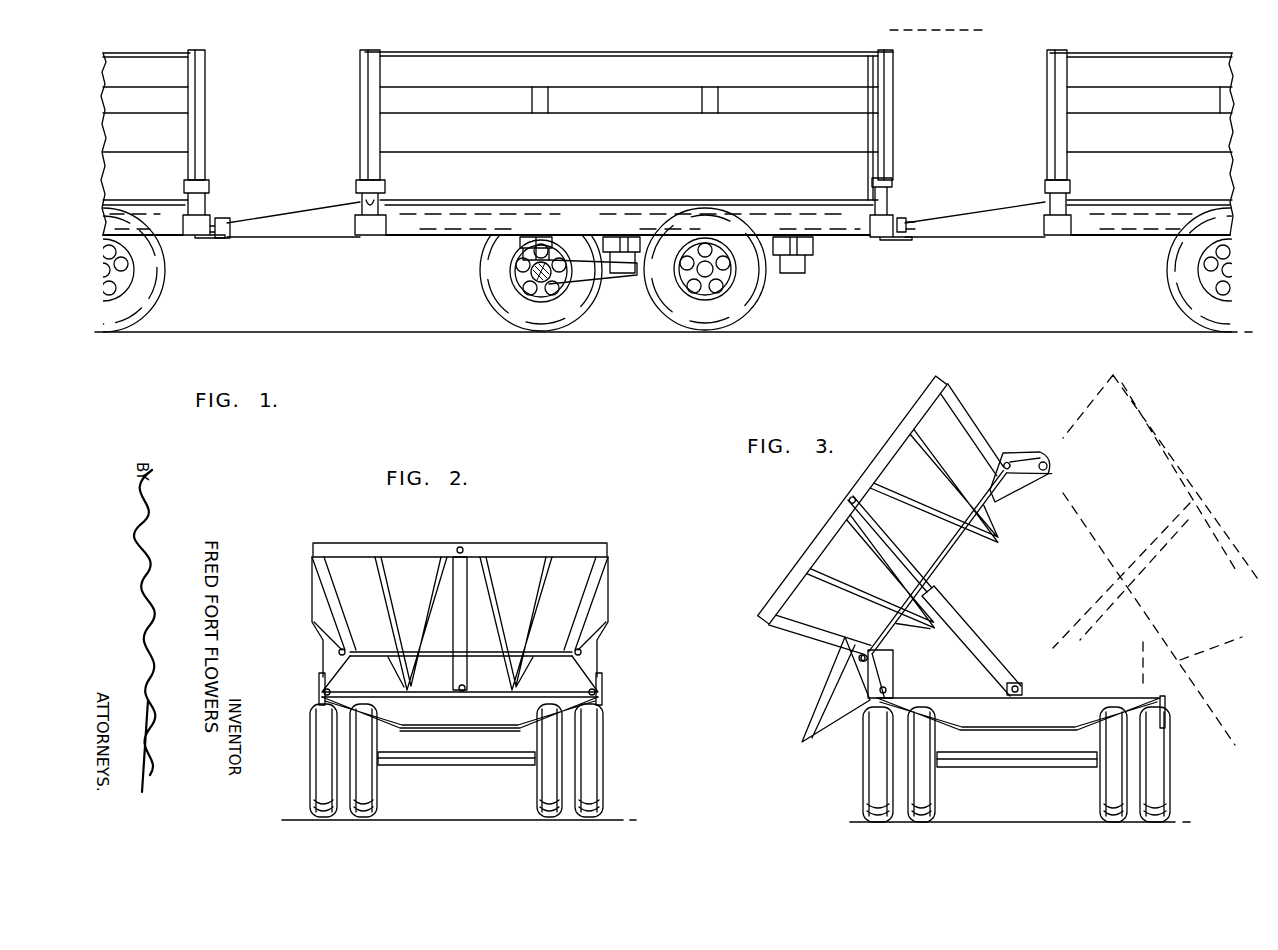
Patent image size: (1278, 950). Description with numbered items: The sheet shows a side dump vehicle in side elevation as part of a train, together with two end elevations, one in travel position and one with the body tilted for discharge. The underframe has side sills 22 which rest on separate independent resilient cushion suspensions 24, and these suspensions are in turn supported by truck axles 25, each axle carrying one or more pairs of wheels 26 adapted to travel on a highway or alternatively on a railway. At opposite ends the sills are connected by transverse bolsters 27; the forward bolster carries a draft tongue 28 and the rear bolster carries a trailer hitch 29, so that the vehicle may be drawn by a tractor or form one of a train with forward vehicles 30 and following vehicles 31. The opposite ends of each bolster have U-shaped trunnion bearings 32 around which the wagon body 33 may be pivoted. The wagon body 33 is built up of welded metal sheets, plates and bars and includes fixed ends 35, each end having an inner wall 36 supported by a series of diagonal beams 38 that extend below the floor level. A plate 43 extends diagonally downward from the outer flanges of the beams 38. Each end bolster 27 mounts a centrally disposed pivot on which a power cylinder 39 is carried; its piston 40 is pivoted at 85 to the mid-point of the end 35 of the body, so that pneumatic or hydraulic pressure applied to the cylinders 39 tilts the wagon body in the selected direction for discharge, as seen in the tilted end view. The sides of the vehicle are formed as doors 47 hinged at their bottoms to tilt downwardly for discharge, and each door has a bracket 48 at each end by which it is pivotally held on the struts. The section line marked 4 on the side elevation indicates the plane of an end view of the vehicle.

In FIG. 1, the section line 4 is at (882, 48).
In FIG. 1, the side sills 22 is at (167, 222).
In FIG. 1, the resilient cushion suspensions 24 is at (517, 258).
In FIG. 1, the truck axles 25 is at (535, 273).
In FIG. 2, the truck axles 25 is at (520, 755).
In FIG. 3, the truck axles 25 is at (1045, 760).
In FIG. 1, the wheels 26 is at (148, 290).
In FIG. 2, the wheels 26 is at (363, 795).
In FIG. 3, the wheels 26 is at (875, 770).
In FIG. 2, the transverse bolsters 27 is at (475, 720).
In FIG. 3, the transverse bolsters 27 is at (1070, 697).
In FIG. 1, the draft tongue 28 is at (305, 225).
In FIG. 1, the trailer hitch 29 is at (905, 222).
In FIG. 1, the forward vehicles 30 is at (190, 50).
In FIG. 1, the following vehicles 31 is at (368, 50).
In FIG. 1, the U-shaped trunnion bearings 32 is at (362, 207).
In FIG. 1, the wagon body 33 is at (180, 80).
In FIG. 2, the fixed ends 35 is at (350, 590).
In FIG. 3, the fixed ends 35 is at (845, 556).
In FIG. 2, the inner wall 36 is at (465, 688).
In FIG. 3, the inner wall 36 is at (1015, 685).
In FIG. 2, the diagonal beams 38 is at (590, 580).
In FIG. 3, the diagonal beams 38 is at (990, 525).
In FIG. 2, the power cylinder 39 is at (466, 623).
In FIG. 3, the power cylinder 39 is at (958, 616).
In FIG. 3, the piston 40 is at (865, 522).
In FIG. 2, the plate 43 is at (340, 675).
In FIG. 1, the doors 47 is at (868, 130).
In FIG. 2, the doors 47 is at (607, 592).
In FIG. 3, the doors 47 is at (975, 410).
In FIG. 2, the bracket 48 is at (325, 638).
In FIG. 2, the pivot 85 is at (462, 548).
In FIG. 3, the pivot 85 is at (847, 498).